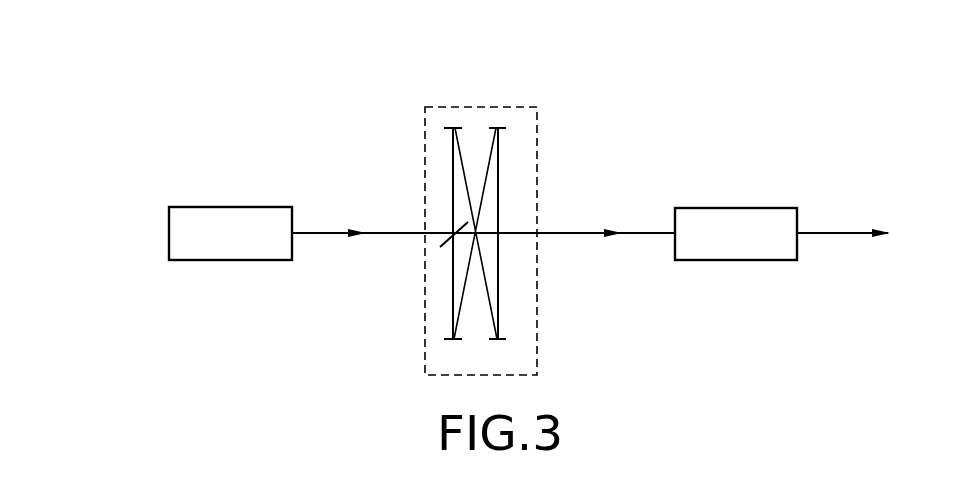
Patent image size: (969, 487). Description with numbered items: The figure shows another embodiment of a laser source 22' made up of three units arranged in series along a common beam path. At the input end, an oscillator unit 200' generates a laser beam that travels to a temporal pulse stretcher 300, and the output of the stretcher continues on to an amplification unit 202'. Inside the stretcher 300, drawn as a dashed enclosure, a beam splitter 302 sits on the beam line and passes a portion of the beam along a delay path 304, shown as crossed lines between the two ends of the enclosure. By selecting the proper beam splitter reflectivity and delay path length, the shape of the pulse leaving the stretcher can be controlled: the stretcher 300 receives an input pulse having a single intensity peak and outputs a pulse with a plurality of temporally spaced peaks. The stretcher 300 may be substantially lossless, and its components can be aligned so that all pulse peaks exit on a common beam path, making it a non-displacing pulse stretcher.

The source 22' is at (95, 120).
The oscillator unit 200' is at (230, 233).
The amplification unit 202' is at (736, 234).
The temporal pulse stretcher 300 is at (425, 152).
The beam splitter 302 is at (440, 247).
The delay path 304 is at (462, 167).